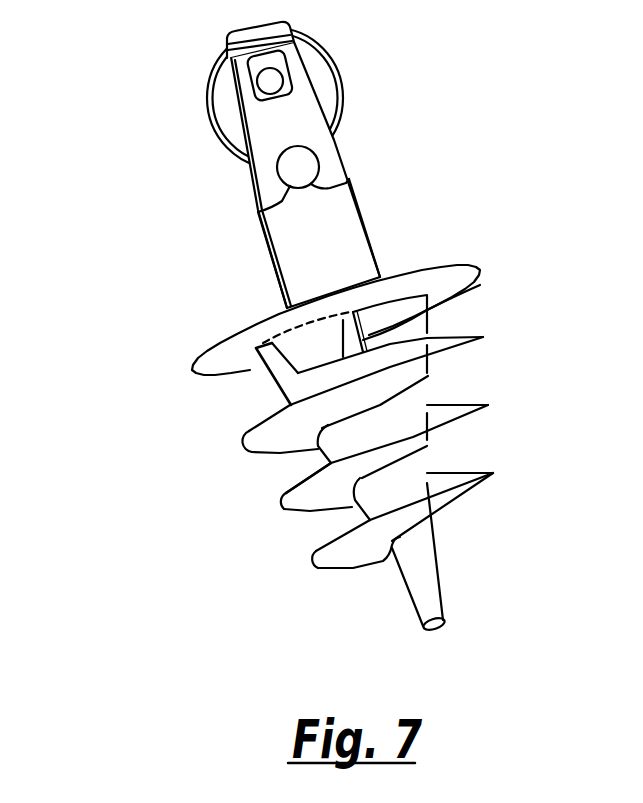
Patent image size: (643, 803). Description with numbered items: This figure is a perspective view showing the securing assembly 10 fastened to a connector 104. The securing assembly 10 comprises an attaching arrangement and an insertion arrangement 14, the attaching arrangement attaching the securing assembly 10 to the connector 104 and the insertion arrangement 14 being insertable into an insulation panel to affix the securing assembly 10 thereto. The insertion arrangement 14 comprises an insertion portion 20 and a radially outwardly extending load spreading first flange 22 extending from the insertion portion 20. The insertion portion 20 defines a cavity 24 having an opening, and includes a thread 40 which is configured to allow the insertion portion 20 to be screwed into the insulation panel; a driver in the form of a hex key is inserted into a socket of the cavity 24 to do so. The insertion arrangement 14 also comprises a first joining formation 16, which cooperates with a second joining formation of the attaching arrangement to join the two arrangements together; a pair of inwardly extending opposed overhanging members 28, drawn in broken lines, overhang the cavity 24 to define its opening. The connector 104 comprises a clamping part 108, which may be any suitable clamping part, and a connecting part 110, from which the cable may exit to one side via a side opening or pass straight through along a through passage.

The securing assembly 10 is at (364, 420).
The insertion arrangement 14 is at (424, 465).
The first joining formation 16 is at (262, 365).
The insertion portion 20 is at (463, 455).
The load spreading first flange 22 is at (478, 266).
The cavity 24 is at (430, 314).
The overhanging members 28 is at (286, 336).
The thread 40 is at (309, 498).
The connector 104 is at (352, 158).
The clamping part 108 is at (254, 124).
The connecting part 110 is at (292, 250).